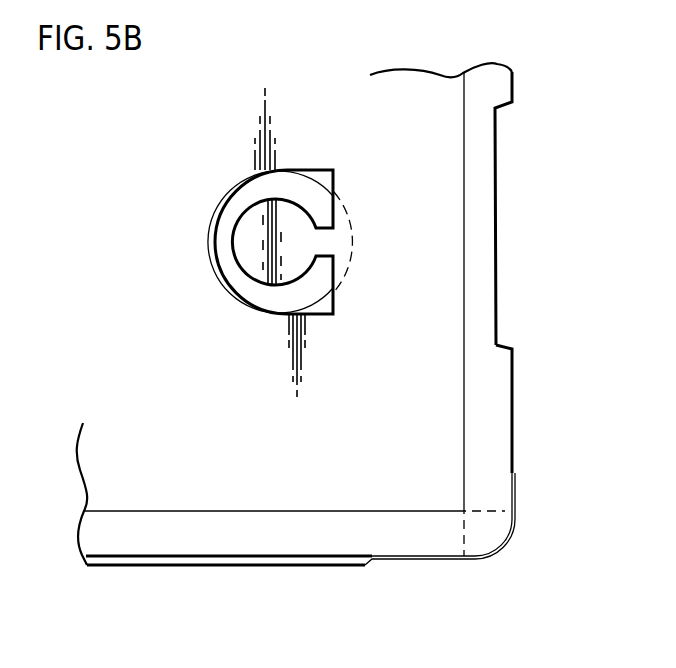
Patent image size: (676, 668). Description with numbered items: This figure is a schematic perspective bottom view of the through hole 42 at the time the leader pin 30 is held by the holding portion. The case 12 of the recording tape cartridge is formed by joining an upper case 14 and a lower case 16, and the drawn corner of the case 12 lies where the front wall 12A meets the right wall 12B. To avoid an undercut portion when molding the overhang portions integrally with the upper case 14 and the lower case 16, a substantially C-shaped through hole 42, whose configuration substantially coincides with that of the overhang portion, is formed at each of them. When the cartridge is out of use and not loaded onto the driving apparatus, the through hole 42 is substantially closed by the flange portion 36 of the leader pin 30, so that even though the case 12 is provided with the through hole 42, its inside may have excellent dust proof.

The case 12 is at (343, 342).
The front wall 12A is at (307, 568).
The right wall 12B is at (512, 432).
The upper case 14 is at (523, 314).
The lower case 16 is at (437, 299).
The leader pin 30 is at (233, 242).
The flange portion 36 is at (233, 242).
The through hole 42 is at (216, 243).